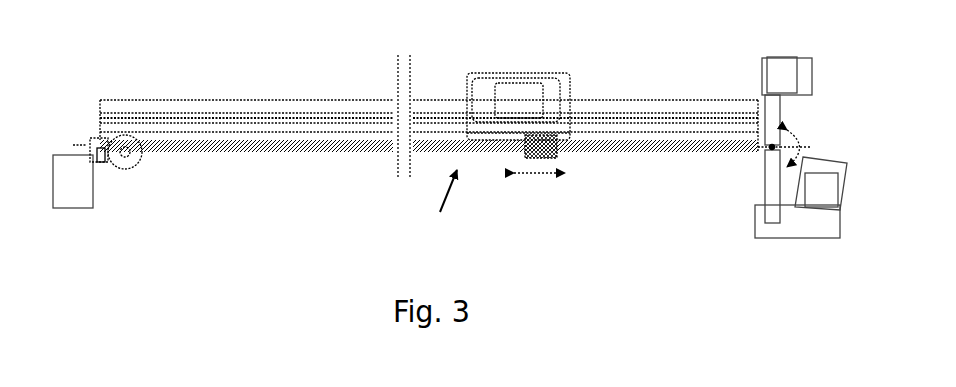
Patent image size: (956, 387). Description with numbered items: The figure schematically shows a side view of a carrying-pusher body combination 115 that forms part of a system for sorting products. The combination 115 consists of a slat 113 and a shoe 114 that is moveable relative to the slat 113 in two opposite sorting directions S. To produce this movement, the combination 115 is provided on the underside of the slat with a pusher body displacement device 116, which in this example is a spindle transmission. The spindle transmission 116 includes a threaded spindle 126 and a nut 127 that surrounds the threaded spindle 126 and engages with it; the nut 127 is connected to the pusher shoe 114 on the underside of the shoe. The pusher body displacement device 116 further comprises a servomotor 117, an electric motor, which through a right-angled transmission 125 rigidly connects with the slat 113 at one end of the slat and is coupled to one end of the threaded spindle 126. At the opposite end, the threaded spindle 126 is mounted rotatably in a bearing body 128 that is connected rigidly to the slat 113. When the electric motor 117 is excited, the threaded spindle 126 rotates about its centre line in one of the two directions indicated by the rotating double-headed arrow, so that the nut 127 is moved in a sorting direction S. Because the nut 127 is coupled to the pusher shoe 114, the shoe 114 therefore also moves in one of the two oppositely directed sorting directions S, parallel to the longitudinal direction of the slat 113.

The slat 113 is at (227, 107).
The shoe 114 is at (560, 93).
The combination 115 is at (768, 121).
The pusher body displacement device 116 is at (448, 206).
The servomotor 117 is at (146, 186).
The right-angled transmission 125 is at (147, 162).
The threaded spindle 126 is at (277, 153).
The nut 127 is at (550, 155).
The bearing body 128 is at (757, 150).
The sorting direction S is at (542, 175).